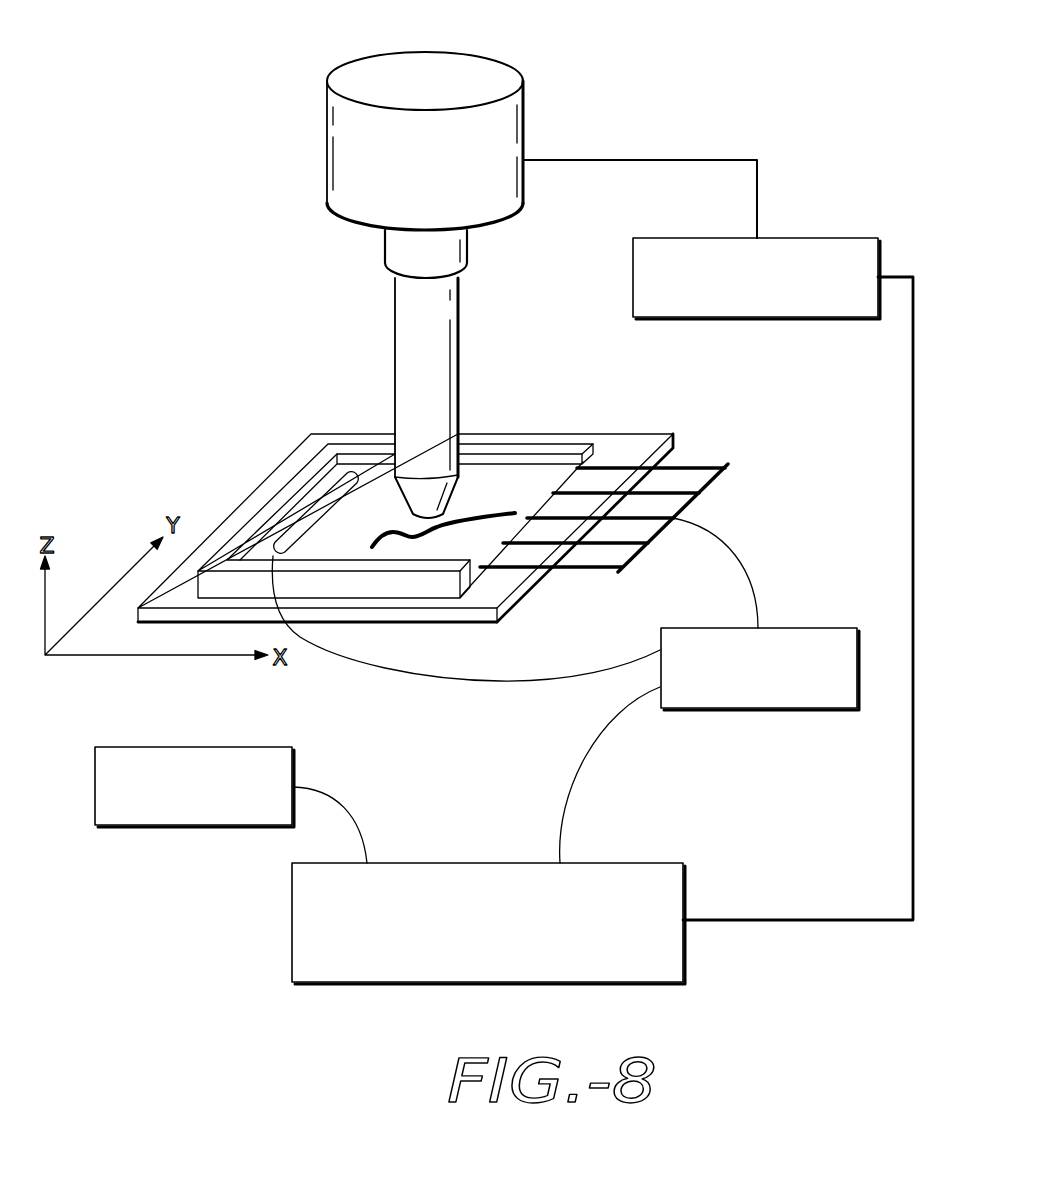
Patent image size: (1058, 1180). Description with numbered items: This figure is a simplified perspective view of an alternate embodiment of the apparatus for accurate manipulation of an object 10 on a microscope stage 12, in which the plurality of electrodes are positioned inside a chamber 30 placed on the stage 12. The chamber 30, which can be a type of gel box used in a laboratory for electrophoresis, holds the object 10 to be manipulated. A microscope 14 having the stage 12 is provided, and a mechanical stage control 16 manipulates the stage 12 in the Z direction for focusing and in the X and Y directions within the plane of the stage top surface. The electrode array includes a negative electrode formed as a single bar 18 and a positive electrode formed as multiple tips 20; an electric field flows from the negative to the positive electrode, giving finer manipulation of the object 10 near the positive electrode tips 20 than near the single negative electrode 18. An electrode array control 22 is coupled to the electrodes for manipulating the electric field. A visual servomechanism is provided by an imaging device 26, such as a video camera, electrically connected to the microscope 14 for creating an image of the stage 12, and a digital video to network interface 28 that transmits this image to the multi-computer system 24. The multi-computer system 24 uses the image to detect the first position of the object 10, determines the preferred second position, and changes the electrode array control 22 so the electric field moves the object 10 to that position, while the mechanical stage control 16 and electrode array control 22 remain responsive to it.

The object 10 is at (437, 536).
The stage 12 is at (635, 447).
The microscope 14 is at (398, 254).
The mechanical stage control 16 is at (118, 745).
The single bar negative electrode 18 is at (350, 483).
The positive electrode tips 20 is at (693, 462).
The electrode array control 22 is at (803, 628).
The multi-computer system 24 is at (685, 966).
The imaging device 26 is at (483, 90).
The digital video to network interface 28 is at (812, 238).
The chamber 30 is at (520, 487).